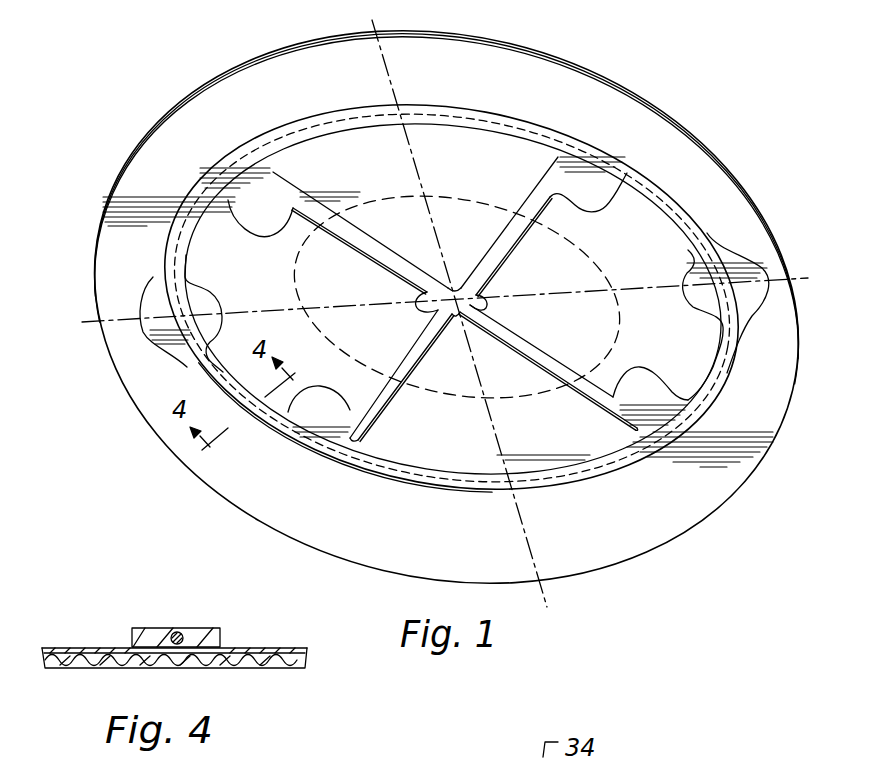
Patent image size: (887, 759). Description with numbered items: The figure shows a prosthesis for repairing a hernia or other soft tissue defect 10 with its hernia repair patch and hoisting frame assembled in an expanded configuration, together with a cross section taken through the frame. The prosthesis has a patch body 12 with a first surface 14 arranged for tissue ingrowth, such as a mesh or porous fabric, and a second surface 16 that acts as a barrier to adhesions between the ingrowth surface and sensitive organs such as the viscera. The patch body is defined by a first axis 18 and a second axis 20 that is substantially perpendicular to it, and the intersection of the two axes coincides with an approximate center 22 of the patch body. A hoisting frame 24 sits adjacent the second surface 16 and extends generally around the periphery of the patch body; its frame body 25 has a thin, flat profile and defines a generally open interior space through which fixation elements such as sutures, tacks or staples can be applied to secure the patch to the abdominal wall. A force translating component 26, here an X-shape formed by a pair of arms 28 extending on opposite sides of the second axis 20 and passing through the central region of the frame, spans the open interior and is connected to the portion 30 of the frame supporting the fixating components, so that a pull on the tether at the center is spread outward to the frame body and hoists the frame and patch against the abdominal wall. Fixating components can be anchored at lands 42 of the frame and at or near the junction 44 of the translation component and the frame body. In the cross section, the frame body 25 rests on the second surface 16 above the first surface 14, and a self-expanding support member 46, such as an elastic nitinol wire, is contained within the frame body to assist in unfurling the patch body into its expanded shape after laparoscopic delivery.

In FIG. 1, the prosthesis for repairing a hernia or other soft tissue defect 10 is at (618, 275).
In FIG. 1, the patch body 12 is at (787, 256).
In FIG. 4, the first surface 14 is at (262, 668).
In FIG. 1, the second surface 16 is at (777, 417).
In FIG. 4, the second surface 16 is at (272, 647).
In FIG. 1, the first axis 18 is at (93, 325).
In FIG. 1, the second axis 20 is at (372, 30).
In FIG. 1, the approximate center 22 is at (453, 298).
In FIG. 1, the hoisting frame 24 is at (703, 205).
In FIG. 4, the hoisting frame 24 is at (145, 628).
In FIG. 1, the frame body 25 is at (498, 110).
In FIG. 1, the force translating component 26 is at (362, 233).
In FIG. 1, the pair of arms 28 is at (497, 263).
In FIG. 1, the portion of the frame supporting the fixating components 30 is at (643, 377).
In FIG. 1, the land 42 is at (270, 223).
In FIG. 1, the junction 44 is at (630, 432).
In FIG. 1, the self-expanding support member 46 is at (560, 137).
In FIG. 4, the self-expanding support member 46 is at (178, 632).